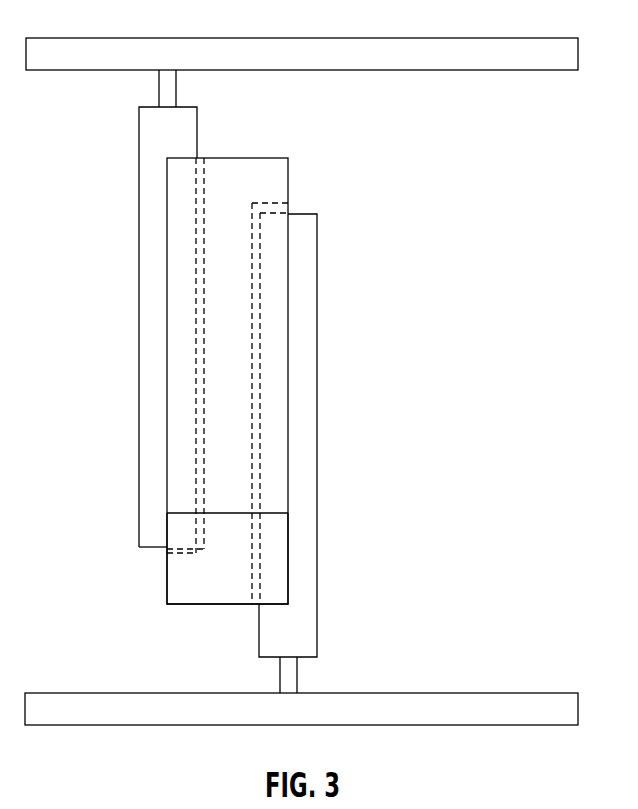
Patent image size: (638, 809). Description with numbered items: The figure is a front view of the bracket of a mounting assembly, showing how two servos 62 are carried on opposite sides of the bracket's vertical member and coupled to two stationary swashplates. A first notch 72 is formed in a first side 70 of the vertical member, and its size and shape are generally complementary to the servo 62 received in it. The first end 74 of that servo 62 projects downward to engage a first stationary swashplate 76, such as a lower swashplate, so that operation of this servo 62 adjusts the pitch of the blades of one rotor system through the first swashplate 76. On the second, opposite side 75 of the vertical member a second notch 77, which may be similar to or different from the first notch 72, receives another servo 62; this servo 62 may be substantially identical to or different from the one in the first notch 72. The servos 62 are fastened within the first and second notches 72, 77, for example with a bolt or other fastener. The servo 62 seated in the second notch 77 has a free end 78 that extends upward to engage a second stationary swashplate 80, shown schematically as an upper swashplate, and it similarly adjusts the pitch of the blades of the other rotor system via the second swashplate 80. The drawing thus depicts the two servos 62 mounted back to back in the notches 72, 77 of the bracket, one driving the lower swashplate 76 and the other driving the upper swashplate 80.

The second stationary swashplate 80 is at (94, 52).
The free end 78 is at (152, 71).
The first side 70 is at (289, 168).
The first notch 72 is at (289, 210).
The servo 62 is at (153, 332).
The second notch 77 is at (167, 550).
The second side 75 is at (167, 585).
The first end 74 is at (300, 692).
The first stationary swashplate 76 is at (93, 703).